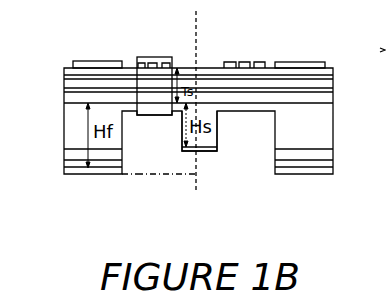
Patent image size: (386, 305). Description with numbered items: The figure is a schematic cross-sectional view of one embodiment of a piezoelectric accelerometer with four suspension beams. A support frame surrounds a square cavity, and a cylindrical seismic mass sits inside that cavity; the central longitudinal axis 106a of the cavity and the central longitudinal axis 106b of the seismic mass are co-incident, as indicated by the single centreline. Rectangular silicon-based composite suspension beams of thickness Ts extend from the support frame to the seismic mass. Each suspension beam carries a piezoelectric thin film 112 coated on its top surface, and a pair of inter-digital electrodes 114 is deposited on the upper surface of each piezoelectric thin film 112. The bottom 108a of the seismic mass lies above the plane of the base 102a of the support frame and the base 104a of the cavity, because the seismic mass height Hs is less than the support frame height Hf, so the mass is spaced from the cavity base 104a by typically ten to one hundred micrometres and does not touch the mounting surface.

The central longitudinal axis of the cavity 106a is at (127, 62).
The central longitudinal axis of the seismic mass 106b is at (154, 86).
The piezoelectric thin film 112 is at (205, 66).
The inter-digital electrodes 114 is at (258, 62).
The base of the support frame 102a is at (77, 175).
The base of the cavity 104a is at (137, 175).
The bottom of the seismic mass 108a is at (188, 151).